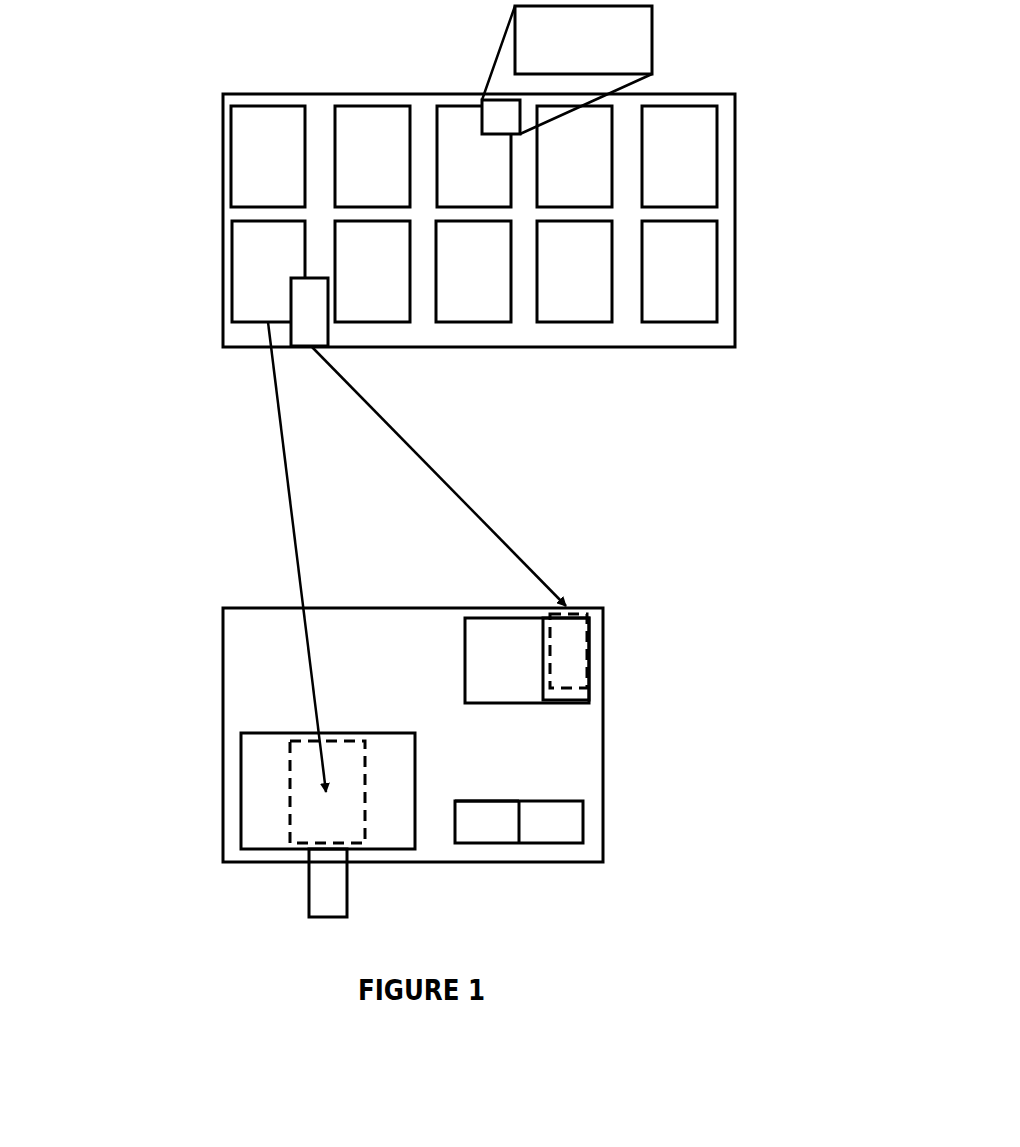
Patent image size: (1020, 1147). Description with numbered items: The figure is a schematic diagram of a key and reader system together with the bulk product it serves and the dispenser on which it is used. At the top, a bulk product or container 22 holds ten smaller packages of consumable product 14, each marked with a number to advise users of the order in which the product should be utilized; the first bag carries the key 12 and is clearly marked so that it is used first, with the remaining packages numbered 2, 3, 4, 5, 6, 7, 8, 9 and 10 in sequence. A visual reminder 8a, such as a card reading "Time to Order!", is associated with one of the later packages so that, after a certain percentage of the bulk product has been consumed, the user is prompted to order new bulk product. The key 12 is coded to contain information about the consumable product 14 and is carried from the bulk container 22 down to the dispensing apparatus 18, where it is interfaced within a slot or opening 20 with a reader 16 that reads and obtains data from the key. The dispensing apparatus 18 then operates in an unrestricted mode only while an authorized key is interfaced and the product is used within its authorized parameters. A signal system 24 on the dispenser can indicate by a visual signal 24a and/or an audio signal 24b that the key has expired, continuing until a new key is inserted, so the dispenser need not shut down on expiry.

The visual reminder 8a is at (567, 70).
The key 12 is at (568, 652).
The consumable product 14 is at (247, 253).
The reader 16 is at (492, 646).
The dispensing apparatus 18 is at (658, 551).
The slot or opening 20 is at (567, 702).
The bulk product or container 22 is at (223, 334).
The signal system 24 is at (581, 836).
The visual signal 24a is at (487, 817).
The audio signal 24b is at (543, 822).
The slot 2 is at (372, 271).
The slot 3 is at (473, 271).
The slot 4 is at (574, 271).
The slot 5 is at (679, 271).
The slot 6 is at (679, 156).
The slot 7 is at (574, 156).
The slot 8 is at (474, 156).
The slot 9 is at (372, 156).
The slot 10 is at (268, 156).